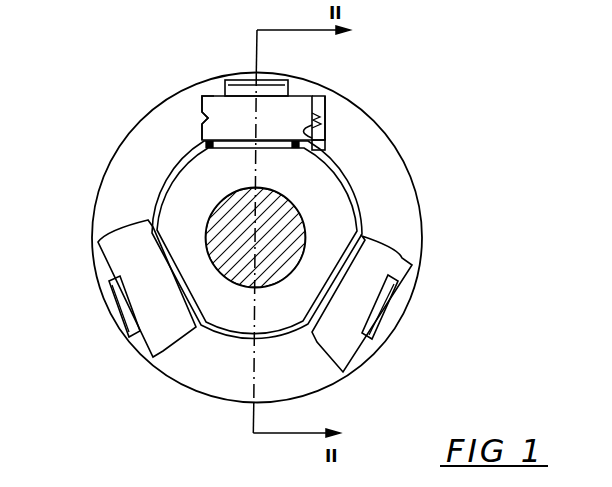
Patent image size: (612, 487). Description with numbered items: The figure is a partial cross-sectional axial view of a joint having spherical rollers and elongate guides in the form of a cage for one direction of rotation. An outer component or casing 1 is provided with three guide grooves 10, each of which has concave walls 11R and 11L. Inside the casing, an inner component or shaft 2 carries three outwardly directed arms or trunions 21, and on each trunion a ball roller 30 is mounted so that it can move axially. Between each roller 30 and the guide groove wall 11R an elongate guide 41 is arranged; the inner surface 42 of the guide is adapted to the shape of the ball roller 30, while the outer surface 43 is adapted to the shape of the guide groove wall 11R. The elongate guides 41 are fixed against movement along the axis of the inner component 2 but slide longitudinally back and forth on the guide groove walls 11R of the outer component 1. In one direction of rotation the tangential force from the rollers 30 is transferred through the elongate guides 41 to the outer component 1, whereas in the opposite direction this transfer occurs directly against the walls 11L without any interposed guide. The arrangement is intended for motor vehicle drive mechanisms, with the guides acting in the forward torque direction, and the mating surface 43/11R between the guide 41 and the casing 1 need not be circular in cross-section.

The outer component or casing 1 is at (157, 138).
The inner component or shaft 2 is at (175, 199).
The guide groove 10 is at (102, 270).
The concave guide groove wall 11L is at (204, 99).
The concave guide groove wall 11R is at (322, 113).
The arm or trunion 21 is at (237, 86).
The ball roller 30 is at (225, 115).
The elongate guide 41 is at (322, 103).
The inner surface of the elongate guide 42 is at (317, 133).
The outer surface of the elongate guide 43 is at (325, 139).